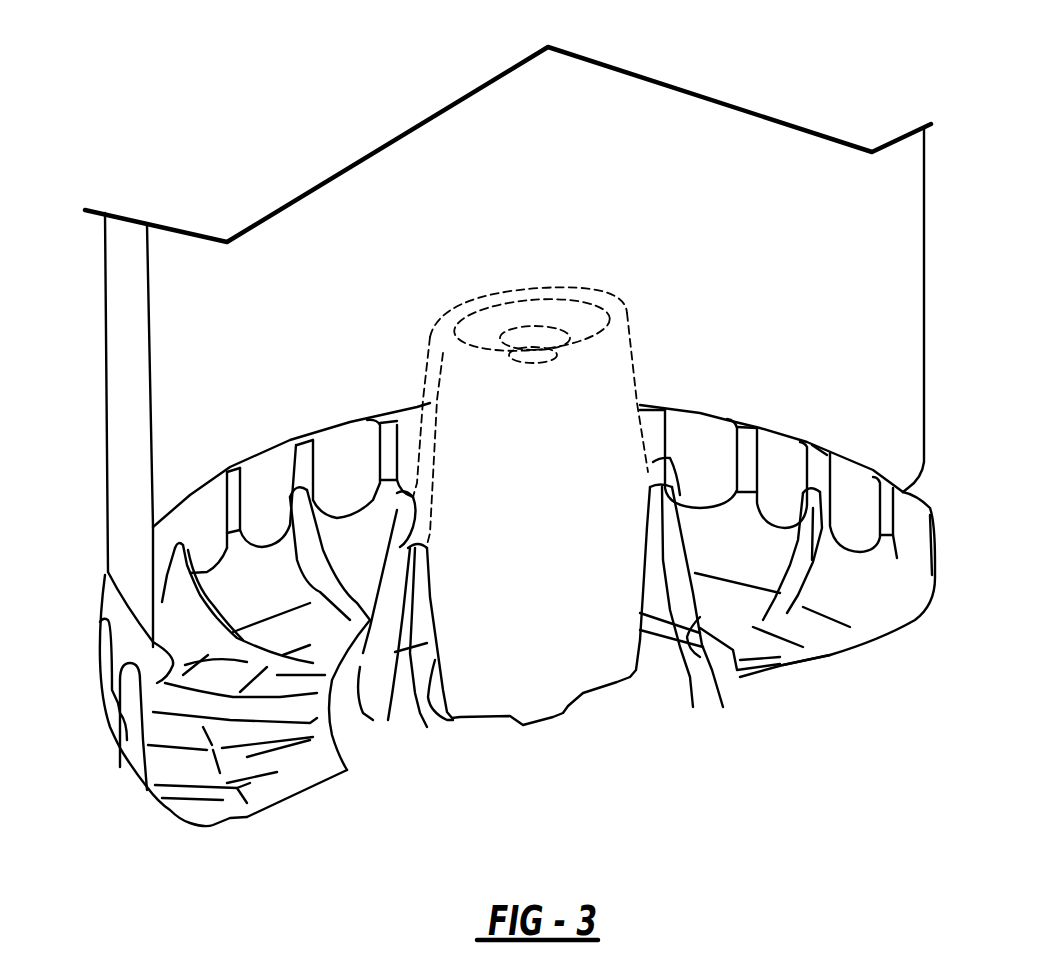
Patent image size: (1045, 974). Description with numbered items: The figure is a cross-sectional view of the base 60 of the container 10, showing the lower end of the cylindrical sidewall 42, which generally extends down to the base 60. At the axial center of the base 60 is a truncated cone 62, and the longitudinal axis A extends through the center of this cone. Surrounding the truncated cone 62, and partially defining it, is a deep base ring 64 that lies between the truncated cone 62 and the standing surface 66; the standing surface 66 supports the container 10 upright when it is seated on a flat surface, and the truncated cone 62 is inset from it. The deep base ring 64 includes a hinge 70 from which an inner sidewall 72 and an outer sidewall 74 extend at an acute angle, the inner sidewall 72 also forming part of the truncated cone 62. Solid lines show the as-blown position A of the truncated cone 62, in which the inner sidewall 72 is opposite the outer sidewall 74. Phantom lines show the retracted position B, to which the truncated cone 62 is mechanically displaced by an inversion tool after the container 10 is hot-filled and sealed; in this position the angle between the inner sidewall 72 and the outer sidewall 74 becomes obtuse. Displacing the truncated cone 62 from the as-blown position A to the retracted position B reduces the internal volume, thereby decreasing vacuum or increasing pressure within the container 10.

The container 10 is at (176, 90).
The cylindrical sidewall 42 is at (137, 475).
The base 60 is at (232, 826).
The truncated cone 62 is at (550, 718).
The deep base ring 64 is at (388, 720).
The standing surface 66 is at (248, 820).
The hinge 70 is at (410, 690).
The inner sidewall 72 is at (427, 680).
The outer sidewall 74 is at (417, 700).
The as-blown position A is at (563, 713).
The retracted position B is at (578, 302).